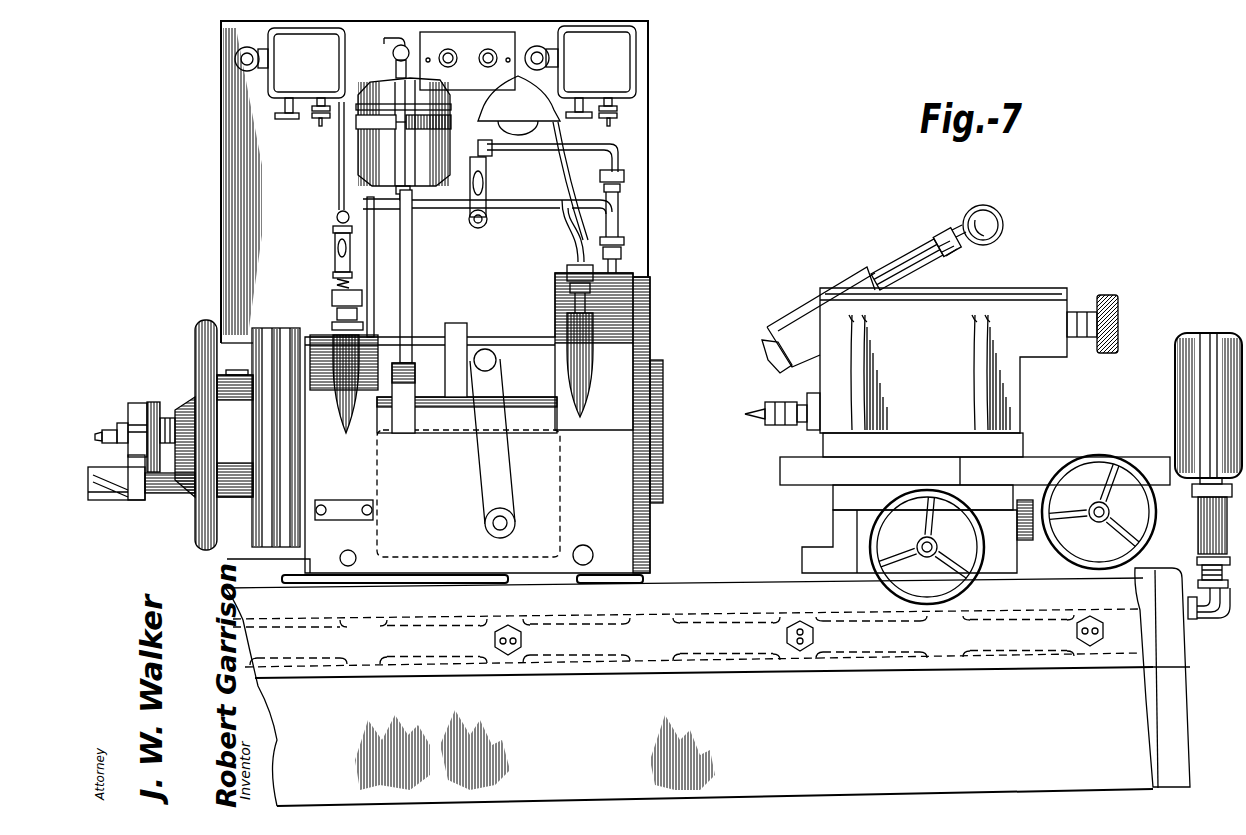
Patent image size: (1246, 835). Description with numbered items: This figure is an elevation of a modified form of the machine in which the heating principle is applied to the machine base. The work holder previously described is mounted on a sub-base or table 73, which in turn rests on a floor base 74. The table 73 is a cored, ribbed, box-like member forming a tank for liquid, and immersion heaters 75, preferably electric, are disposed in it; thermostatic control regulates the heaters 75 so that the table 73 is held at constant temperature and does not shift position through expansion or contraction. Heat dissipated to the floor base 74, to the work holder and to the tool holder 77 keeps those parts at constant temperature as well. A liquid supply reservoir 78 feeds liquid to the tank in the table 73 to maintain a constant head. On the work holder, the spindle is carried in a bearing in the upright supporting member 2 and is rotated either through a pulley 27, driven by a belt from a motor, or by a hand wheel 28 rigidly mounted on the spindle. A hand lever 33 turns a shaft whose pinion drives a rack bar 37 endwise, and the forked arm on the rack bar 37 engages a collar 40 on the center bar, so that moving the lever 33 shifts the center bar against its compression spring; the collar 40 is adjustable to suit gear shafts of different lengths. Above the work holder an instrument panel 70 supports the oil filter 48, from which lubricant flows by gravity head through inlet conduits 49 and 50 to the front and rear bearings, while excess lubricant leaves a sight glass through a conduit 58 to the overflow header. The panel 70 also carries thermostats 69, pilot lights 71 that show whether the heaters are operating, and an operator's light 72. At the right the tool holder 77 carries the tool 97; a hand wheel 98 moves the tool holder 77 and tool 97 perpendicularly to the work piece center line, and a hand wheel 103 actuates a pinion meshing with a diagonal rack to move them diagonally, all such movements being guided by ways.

The upright supporting member 2 is at (472, 428).
The pulley 27 is at (273, 521).
The hand wheel 28 is at (196, 329).
The hand lever 33 is at (498, 478).
The rack bar 37 is at (175, 486).
The collar 40 is at (153, 402).
The oil filter 48 is at (403, 119).
The inlet conduit 49 is at (538, 200).
The inlet conduit 50 is at (364, 204).
The conduit 58 is at (611, 163).
The thermostats 69 is at (435, 76).
The instrument panel 70 is at (650, 188).
The pilot lights 71 is at (480, 60).
The operator's light 72 is at (533, 158).
The sub-base or table 73 is at (727, 588).
The floor base 74 is at (733, 687).
The immersion heaters 75 is at (523, 642).
The tool holder 77 is at (997, 303).
The liquid supply reservoir 78 is at (1190, 343).
The tool 97 is at (758, 413).
The hand wheel 98 is at (868, 553).
The hand wheel 103 is at (1137, 549).